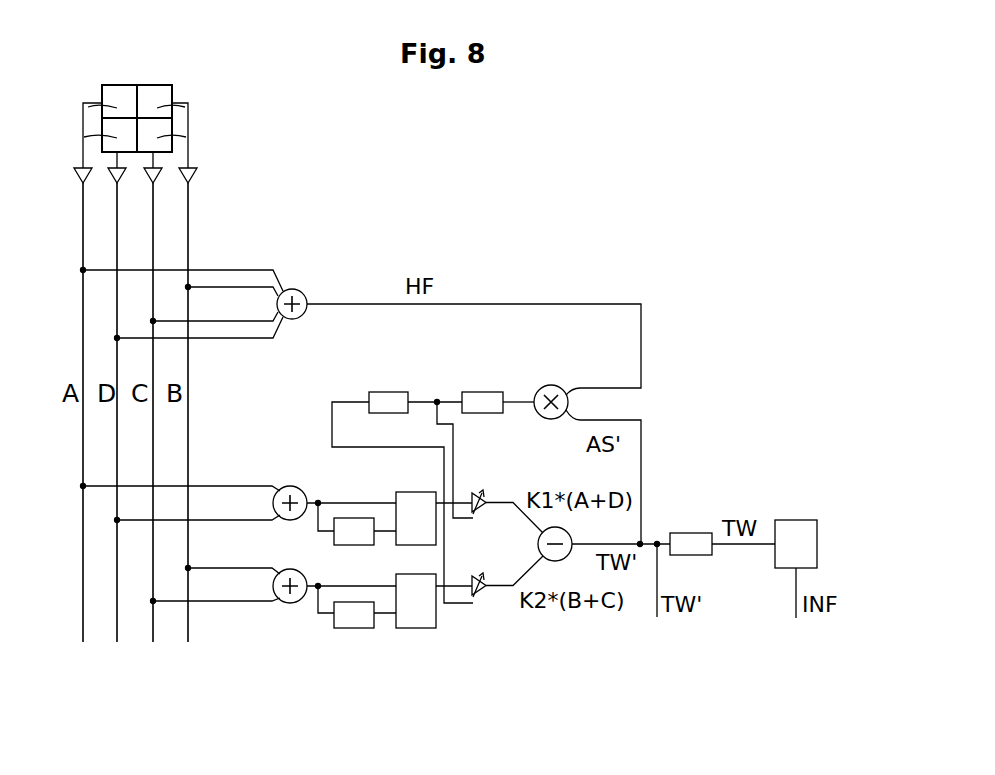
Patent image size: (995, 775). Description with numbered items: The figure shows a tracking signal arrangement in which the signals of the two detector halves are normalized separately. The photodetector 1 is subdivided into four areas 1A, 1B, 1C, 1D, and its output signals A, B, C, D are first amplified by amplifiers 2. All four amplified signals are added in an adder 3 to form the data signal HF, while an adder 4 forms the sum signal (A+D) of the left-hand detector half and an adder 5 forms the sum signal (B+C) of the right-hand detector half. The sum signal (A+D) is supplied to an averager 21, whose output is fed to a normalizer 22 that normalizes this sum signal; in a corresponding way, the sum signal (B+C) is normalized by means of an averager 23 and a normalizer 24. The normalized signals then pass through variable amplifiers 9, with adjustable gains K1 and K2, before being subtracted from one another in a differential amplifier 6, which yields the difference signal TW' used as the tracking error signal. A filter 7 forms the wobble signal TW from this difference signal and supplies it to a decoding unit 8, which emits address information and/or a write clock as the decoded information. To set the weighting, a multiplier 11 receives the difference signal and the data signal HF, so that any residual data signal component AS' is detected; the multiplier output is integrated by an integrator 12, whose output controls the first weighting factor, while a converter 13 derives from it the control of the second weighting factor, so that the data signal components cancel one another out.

The photodetector 1 is at (178, 77).
The photodetector area 1A is at (85, 104).
The photodetector area 1B is at (192, 106).
The photodetector area 1C is at (190, 137).
The photodetector area 1D is at (84, 137).
The amplifiers 2 is at (185, 188).
The adder 3 is at (305, 285).
The adder 4 is at (288, 485).
The adder 5 is at (289, 607).
The differential amplifier 6 is at (536, 545).
The filter 7 is at (687, 525).
The decoding unit 8 is at (791, 512).
The variable amplifier 9 is at (500, 549).
The multiplier 11 is at (540, 383).
The integrator 12 is at (471, 388).
The converter 13 is at (388, 389).
The averager 21 is at (362, 517).
The normalizer 22 is at (431, 491).
The averager 23 is at (350, 631).
The normalizer 24 is at (418, 631).